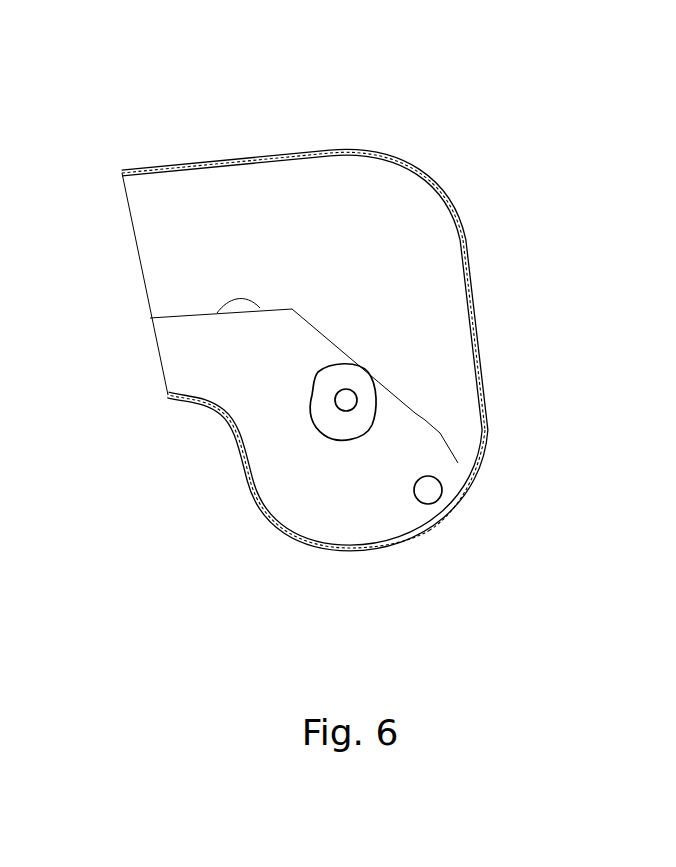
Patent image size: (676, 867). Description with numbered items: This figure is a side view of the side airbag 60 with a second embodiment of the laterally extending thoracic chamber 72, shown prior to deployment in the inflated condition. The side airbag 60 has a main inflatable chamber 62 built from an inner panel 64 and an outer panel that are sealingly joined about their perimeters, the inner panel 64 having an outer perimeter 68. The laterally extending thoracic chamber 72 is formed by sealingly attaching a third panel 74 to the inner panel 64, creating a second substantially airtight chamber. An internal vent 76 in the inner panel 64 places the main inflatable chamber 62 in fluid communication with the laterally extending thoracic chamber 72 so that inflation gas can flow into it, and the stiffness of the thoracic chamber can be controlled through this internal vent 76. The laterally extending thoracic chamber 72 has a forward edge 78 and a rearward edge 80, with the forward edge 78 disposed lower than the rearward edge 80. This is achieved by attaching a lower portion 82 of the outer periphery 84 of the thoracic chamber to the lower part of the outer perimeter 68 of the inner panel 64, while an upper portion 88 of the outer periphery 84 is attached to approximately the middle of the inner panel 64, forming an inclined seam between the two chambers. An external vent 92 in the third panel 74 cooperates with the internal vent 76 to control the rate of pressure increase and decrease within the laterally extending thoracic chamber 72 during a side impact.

The side airbag 60 is at (238, 139).
The main inflatable chamber 62 is at (330, 154).
The inner panel 64 is at (415, 235).
The outer perimeter 68 is at (412, 168).
The laterally extending thoracic chamber 72 is at (450, 463).
The third panel 74 is at (282, 497).
The internal vent 76 is at (346, 389).
The forward edge 78 is at (455, 432).
The rearward edge 80 is at (175, 317).
The lower portion 82 is at (308, 546).
The outer periphery 84 is at (240, 472).
The upper portion 88 is at (218, 312).
The external vent 92 is at (437, 491).